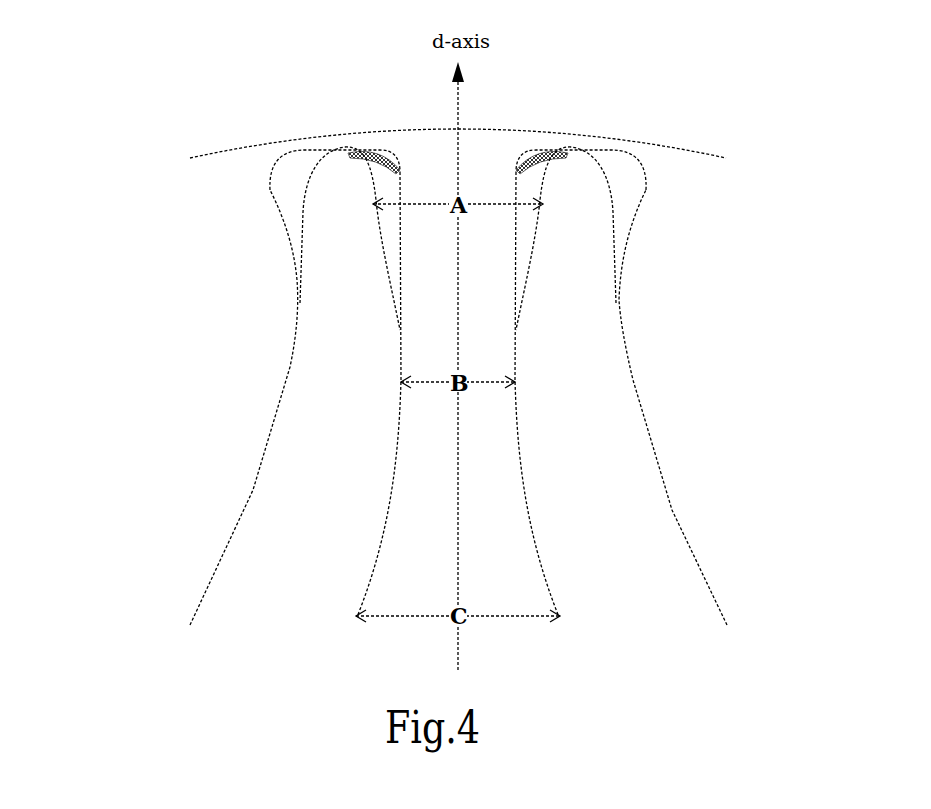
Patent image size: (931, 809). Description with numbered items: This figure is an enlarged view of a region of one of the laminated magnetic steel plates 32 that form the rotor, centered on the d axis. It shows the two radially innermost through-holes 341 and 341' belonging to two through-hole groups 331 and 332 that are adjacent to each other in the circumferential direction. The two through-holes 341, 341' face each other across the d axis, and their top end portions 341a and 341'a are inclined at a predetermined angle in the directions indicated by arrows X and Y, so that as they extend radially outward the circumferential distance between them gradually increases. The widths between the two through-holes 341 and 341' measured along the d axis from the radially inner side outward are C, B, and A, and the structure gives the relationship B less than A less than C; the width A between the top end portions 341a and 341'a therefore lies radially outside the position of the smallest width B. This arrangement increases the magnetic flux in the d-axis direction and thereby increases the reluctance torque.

The magnetic steel plate 32 is at (483, 497).
The through-hole group 331 is at (335, 367).
The through-hole group 332 is at (586, 367).
The radially innermost through-hole 341 is at (194, 407).
The top end portion 341a is at (335, 248).
The radially innermost through-hole 341' is at (695, 407).
The top end portion 341'a is at (654, 191).